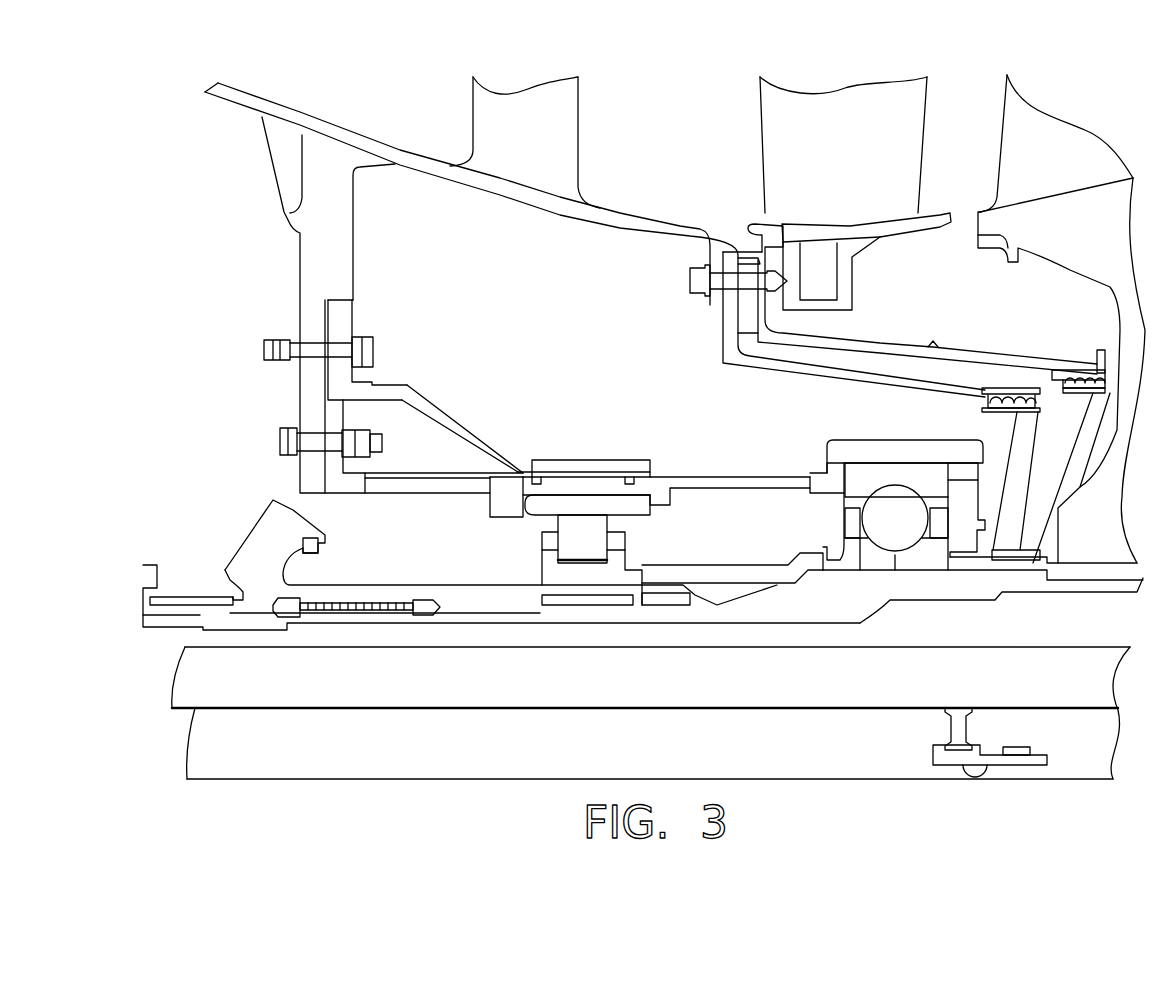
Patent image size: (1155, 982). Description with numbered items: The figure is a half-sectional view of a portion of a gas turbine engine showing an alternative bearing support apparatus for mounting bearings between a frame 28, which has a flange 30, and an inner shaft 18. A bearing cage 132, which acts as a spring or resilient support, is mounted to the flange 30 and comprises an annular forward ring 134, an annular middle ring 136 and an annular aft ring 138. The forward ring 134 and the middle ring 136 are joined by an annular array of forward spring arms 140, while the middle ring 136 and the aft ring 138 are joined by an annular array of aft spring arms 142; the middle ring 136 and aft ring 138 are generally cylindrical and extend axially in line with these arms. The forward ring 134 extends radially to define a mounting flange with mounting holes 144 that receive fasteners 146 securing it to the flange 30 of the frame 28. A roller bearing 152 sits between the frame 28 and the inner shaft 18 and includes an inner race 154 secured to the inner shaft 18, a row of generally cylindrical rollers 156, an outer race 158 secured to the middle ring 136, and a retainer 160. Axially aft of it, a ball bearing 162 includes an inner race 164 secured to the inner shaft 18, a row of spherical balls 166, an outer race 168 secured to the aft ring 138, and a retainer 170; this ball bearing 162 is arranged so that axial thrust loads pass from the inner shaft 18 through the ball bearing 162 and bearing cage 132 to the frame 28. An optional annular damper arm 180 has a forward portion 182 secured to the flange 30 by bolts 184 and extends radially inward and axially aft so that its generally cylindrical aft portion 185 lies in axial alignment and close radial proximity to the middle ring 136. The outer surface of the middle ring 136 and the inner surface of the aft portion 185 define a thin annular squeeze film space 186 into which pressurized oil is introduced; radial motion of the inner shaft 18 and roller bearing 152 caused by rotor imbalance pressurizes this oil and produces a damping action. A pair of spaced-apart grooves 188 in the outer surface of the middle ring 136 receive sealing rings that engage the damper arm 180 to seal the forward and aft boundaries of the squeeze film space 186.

The inner shaft 18 is at (245, 623).
The frame 28 is at (345, 132).
The flange 30 is at (337, 212).
The bearing cage 132 is at (758, 447).
The forward ring 134 is at (338, 490).
The middle ring 136 is at (652, 485).
The aft ring 138 is at (920, 447).
The forward spring arms 140 is at (402, 488).
The aft spring arms 142 is at (680, 485).
The mounting holes 144 is at (333, 432).
The fasteners 146 is at (282, 433).
The roller bearing 152 is at (524, 530).
The inner race 154 is at (550, 568).
The rollers 156 is at (600, 548).
The outer race 158 is at (633, 507).
The retainer 160 is at (617, 538).
The ball bearing 162 is at (837, 518).
The inner race 164 is at (912, 560).
The balls 166 is at (916, 530).
The outer race 168 is at (888, 485).
The retainer 170 is at (942, 518).
The damper arm 180 is at (498, 412).
The forward portion 182 is at (403, 390).
The bolts 184 is at (365, 353).
The aft portion 185 is at (535, 470).
The squeeze film space 186 is at (600, 462).
The grooves 188 is at (530, 470).